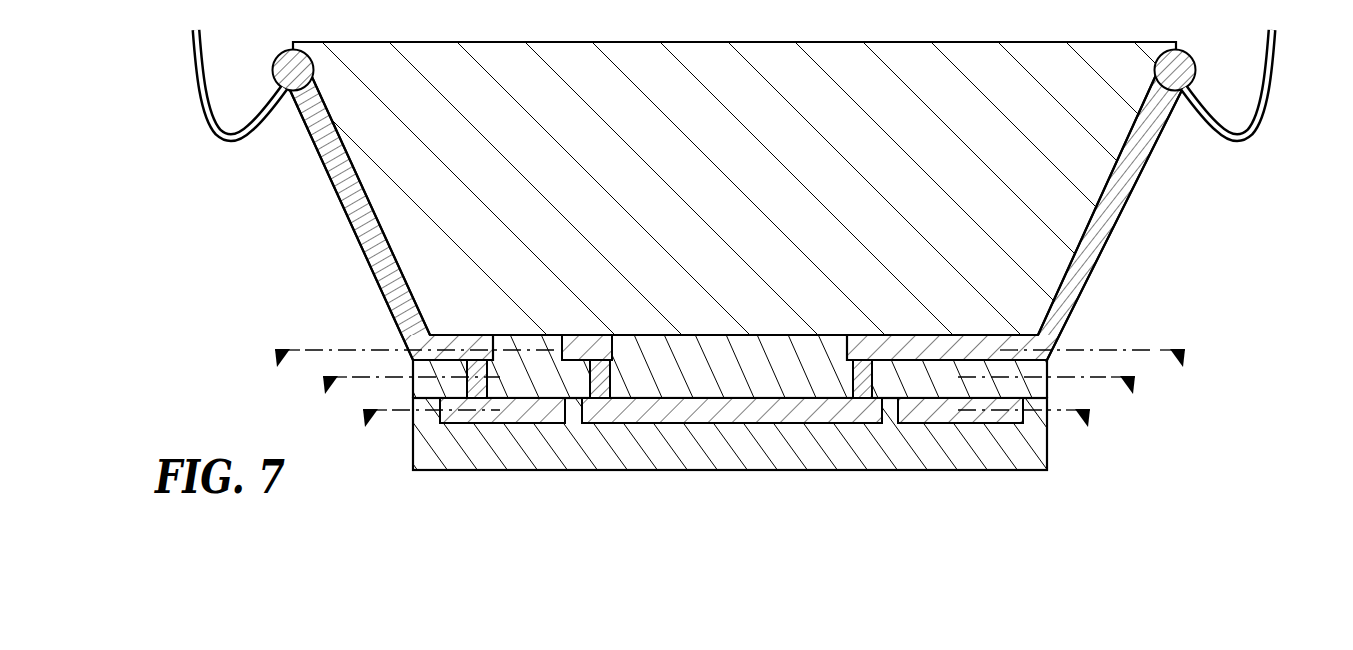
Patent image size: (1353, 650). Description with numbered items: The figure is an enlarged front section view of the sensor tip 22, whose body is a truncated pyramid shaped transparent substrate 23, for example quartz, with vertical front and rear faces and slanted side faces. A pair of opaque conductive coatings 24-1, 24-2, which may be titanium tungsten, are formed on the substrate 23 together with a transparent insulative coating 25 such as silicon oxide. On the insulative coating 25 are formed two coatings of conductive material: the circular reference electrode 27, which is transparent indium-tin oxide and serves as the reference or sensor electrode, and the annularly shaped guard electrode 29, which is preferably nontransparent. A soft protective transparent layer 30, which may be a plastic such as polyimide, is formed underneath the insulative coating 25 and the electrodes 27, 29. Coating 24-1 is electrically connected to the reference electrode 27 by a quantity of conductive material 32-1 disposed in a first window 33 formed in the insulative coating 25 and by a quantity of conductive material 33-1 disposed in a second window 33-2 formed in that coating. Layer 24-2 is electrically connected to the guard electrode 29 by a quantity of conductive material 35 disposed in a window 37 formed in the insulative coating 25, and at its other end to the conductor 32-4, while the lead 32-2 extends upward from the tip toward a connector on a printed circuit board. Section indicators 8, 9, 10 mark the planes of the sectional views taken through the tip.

The sensor tip 22 is at (324, 233).
The transparent substrate 23 is at (628, 111).
The opaque conductive coating 24-1 is at (1125, 202).
The opaque conductive coating 24-2 is at (326, 168).
The transparent insulative coating 25 is at (668, 380).
The reference electrode 27 is at (740, 413).
The guard electrode 29 is at (509, 418).
The protective transparent layer 30 is at (1006, 448).
The conductive material 32-1 is at (853, 372).
The lead 32-2 is at (1262, 127).
The conductor 32-4 is at (204, 118).
The first window 33 is at (877, 374).
The conductive material 33-1 is at (600, 383).
The second window 33-2 is at (612, 362).
The conductive material 35 is at (477, 392).
The window 37 is at (489, 366).
The section line 8- 8 is at (728, 435).
The section line 9- 9 is at (728, 400).
The section line 10- 10 is at (729, 375).